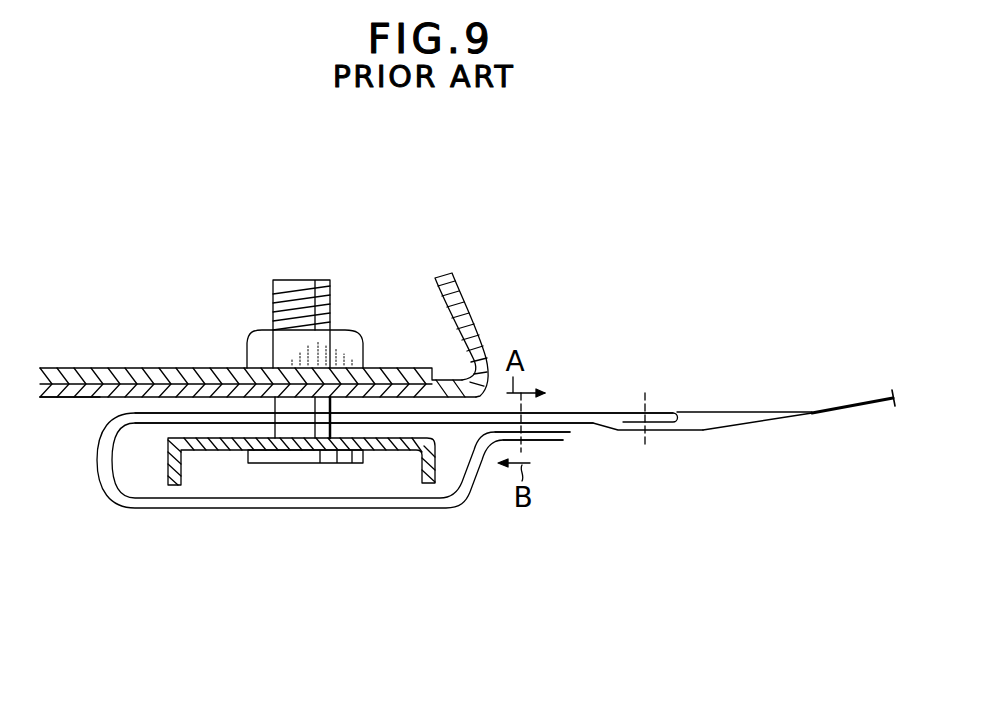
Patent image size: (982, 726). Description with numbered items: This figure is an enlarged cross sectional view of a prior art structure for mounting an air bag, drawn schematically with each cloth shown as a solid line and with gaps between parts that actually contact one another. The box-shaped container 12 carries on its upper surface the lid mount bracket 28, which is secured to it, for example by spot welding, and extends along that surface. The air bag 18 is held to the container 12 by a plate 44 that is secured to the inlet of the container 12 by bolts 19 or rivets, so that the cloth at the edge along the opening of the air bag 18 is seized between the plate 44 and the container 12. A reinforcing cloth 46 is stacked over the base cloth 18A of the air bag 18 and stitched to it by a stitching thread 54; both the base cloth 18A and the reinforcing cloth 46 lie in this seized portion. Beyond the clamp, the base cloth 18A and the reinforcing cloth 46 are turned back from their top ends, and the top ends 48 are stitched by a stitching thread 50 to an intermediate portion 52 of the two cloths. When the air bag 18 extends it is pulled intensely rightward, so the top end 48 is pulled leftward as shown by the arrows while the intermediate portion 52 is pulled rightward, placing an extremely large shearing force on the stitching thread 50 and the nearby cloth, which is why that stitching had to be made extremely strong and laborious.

The container 12 is at (80, 399).
The air bag 18 is at (688, 362).
The base cloth 18A is at (828, 411).
The bolts 19 is at (333, 292).
The lid mount bracket 28 is at (87, 367).
The plate 44 is at (207, 451).
The reinforcing cloth 46 is at (617, 411).
The top ends 48 is at (461, 512).
The stitching thread 50 is at (521, 450).
The intermediate portion 52 is at (560, 405).
The stitching thread 54 is at (650, 396).